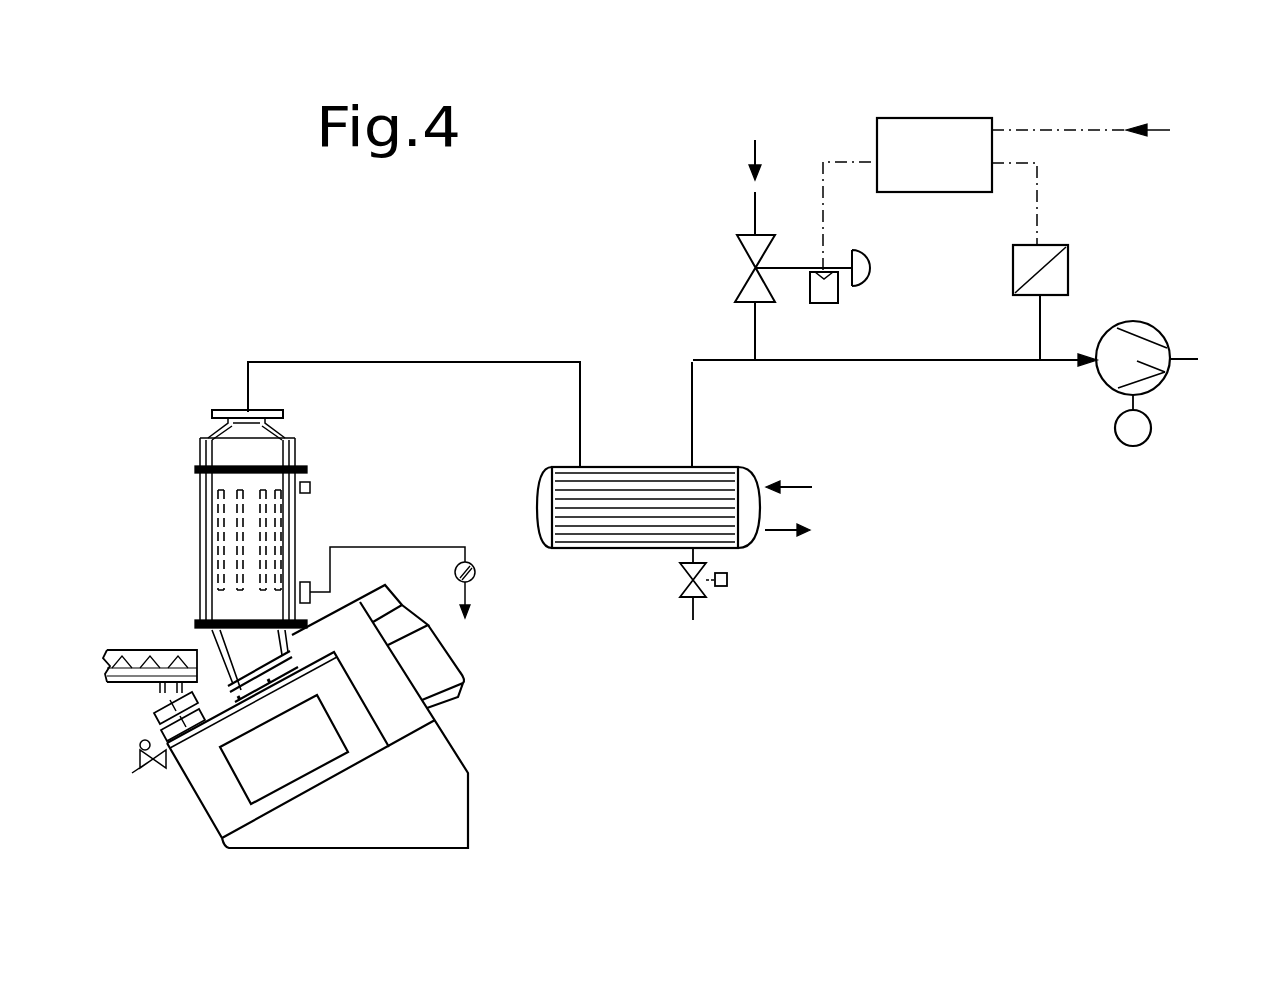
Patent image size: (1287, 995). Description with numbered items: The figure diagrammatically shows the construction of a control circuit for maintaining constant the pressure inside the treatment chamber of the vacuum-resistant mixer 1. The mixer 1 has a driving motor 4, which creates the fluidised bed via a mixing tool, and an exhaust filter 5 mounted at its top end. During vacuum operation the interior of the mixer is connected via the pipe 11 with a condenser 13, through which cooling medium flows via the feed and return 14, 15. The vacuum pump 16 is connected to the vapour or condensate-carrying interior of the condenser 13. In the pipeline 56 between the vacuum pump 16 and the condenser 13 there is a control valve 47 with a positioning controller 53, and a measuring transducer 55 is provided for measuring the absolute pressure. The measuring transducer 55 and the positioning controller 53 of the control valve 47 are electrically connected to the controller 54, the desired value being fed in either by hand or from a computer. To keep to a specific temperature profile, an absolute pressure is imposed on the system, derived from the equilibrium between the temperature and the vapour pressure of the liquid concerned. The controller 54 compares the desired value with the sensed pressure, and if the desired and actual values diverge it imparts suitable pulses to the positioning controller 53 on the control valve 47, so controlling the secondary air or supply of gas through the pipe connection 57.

The vacuum-resistant mixer 1 is at (350, 822).
The driving motor 4 is at (423, 658).
The exhaust filter 5 is at (228, 449).
The pipe 11 is at (372, 362).
The condenser 13 is at (605, 528).
The feed 14 is at (807, 529).
The return 15 is at (808, 487).
The vacuum pump 16 is at (1172, 378).
The control valve 47 is at (748, 293).
The positioning controller 53 is at (830, 308).
The controller 54 is at (950, 118).
The measuring transducer 55 is at (1068, 273).
The pipeline 56 is at (987, 362).
The pipe connection 57 is at (752, 212).